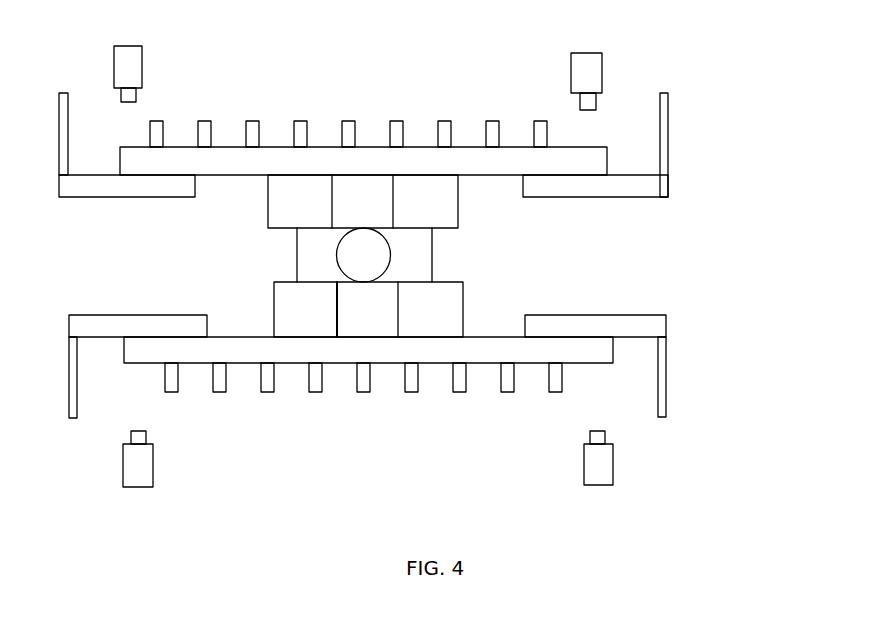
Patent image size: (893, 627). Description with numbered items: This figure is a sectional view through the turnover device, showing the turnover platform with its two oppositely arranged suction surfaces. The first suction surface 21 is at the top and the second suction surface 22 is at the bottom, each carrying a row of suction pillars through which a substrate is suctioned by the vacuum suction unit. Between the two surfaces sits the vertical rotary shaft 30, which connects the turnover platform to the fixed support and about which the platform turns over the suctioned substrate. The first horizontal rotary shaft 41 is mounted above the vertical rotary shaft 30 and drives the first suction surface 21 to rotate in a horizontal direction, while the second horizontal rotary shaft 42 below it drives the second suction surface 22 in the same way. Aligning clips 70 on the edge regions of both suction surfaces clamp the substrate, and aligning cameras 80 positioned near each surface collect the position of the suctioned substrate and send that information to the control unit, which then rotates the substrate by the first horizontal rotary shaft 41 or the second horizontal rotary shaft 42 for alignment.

The first suction surface 21 is at (372, 140).
The second suction surface 22 is at (385, 372).
The vertical rotary shaft 30 is at (403, 271).
The first horizontal rotary shaft 41 is at (290, 203).
The second horizontal rotary shaft 42 is at (430, 325).
The aligning clips 70 is at (662, 173).
The aligning cameras 80 is at (593, 79).